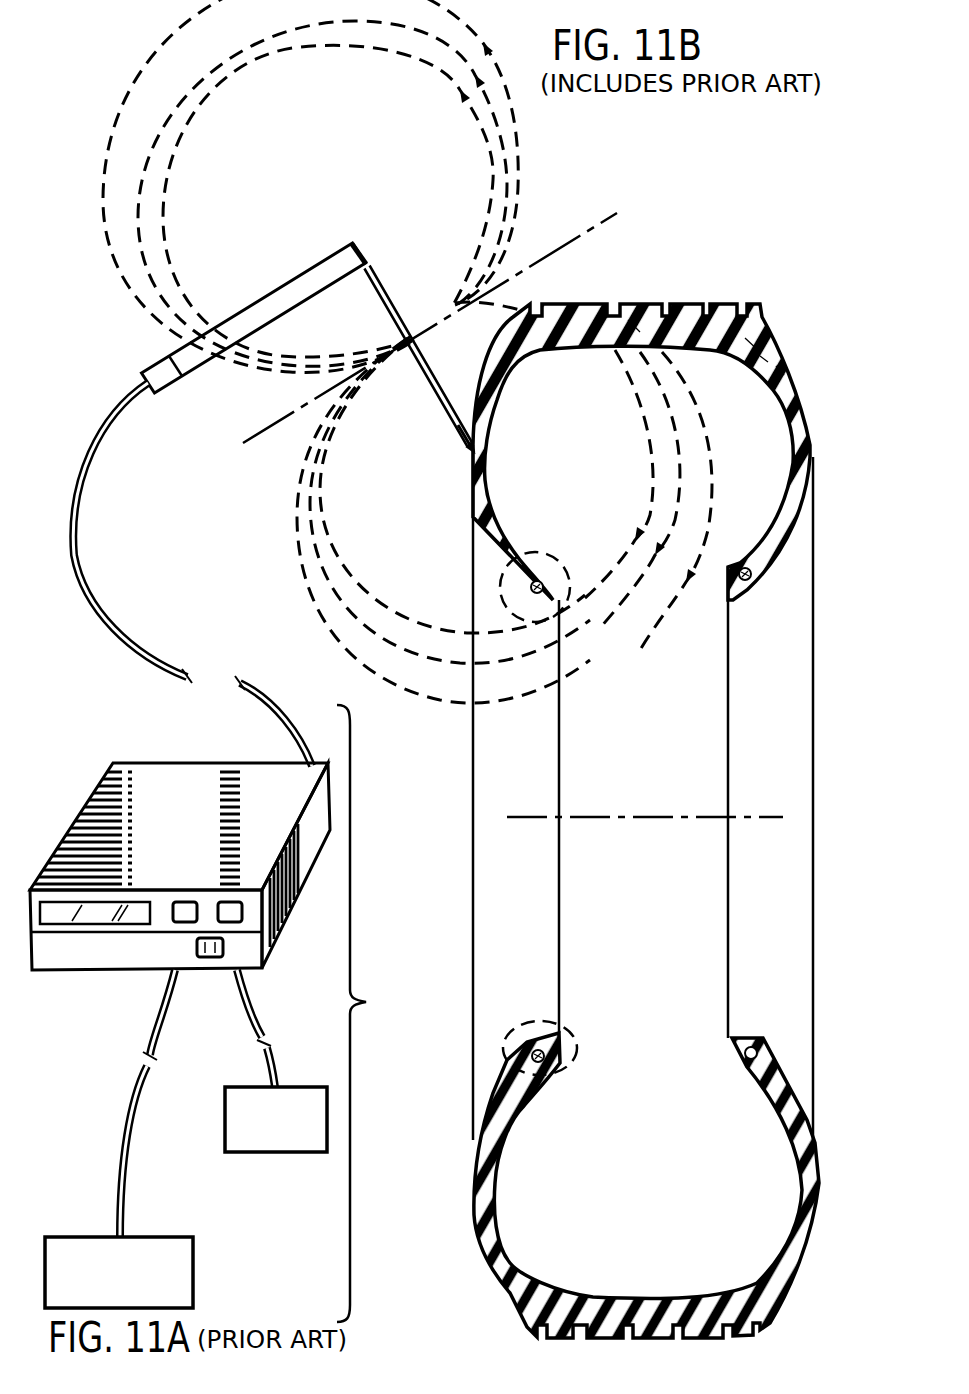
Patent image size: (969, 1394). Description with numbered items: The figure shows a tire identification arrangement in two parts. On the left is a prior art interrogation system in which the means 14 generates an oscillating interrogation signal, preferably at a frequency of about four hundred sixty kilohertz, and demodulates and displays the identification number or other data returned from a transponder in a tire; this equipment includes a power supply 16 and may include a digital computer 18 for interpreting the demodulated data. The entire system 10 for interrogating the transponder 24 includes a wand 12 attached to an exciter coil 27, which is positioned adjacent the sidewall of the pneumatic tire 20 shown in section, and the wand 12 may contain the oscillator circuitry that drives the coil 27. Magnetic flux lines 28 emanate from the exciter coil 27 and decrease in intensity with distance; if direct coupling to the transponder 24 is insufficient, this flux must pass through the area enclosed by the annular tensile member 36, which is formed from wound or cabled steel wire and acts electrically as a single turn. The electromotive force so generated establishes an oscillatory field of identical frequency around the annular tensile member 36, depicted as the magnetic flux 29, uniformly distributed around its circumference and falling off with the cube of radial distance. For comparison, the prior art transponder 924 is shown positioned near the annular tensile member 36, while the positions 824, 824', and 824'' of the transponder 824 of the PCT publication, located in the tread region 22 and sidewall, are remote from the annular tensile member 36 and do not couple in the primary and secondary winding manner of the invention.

In FIG. 11A, the system for interrogating the transponder 10 is at (95, 385).
In FIG. 11B, the wand 12 is at (289, 279).
In FIG. 11A, the means for generating an oscillating interrogation signal 14 is at (293, 895).
In FIG. 11A, the power supply 16 is at (291, 1085).
In FIG. 11A, the digital computer 18 is at (185, 1253).
In FIG. 11B, the pneumatic tire 20 is at (680, 300).
In FIG. 11B, the tread belt region 22 is at (760, 357).
In FIG. 11B, the integrated circuit transponder 24 is at (560, 1080).
In FIG. 11B, the exciter coil 27 is at (457, 432).
In FIG. 11B, the magnetic flux lines 28 is at (298, 582).
In FIG. 11B, the magnetic flux around the annular tensile member 29 is at (570, 563).
In FIG. 11B, the annular tensile member 36 is at (543, 597).
In FIG. 11B, the transponder 824 is at (787, 317).
In FIG. 11B, the transponder position 824' is at (626, 284).
In FIG. 11B, the transponder position 824'' is at (820, 361).
In FIG. 11B, the prior art transponder 924 is at (753, 577).